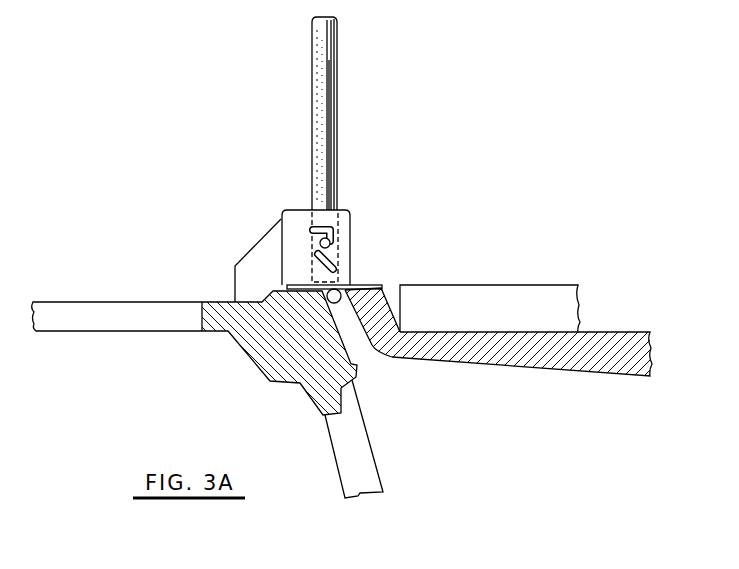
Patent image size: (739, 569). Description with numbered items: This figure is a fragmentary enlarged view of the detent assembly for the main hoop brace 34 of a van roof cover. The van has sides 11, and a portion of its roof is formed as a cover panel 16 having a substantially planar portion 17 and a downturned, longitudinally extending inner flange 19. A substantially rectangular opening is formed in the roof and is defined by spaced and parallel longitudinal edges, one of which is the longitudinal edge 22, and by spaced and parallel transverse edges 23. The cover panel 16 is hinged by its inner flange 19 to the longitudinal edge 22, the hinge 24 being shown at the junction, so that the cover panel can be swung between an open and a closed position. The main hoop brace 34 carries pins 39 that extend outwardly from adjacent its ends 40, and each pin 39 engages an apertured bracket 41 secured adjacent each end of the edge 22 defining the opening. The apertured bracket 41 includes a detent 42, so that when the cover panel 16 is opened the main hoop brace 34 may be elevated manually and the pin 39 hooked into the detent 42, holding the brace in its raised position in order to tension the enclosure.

The sides 11 is at (367, 478).
The cover panel 16 is at (453, 380).
The substantially planar portion 17 is at (553, 360).
The inner flange 19 is at (400, 305).
The longitudinal edge 22 is at (293, 291).
The transverse edge 23 is at (135, 320).
The hinge 24 is at (341, 287).
The main hoop brace 34 is at (298, 85).
The pin 39 is at (317, 240).
The end 40 is at (334, 196).
The apertured bracket 41 is at (235, 268).
The detent 42 is at (331, 252).